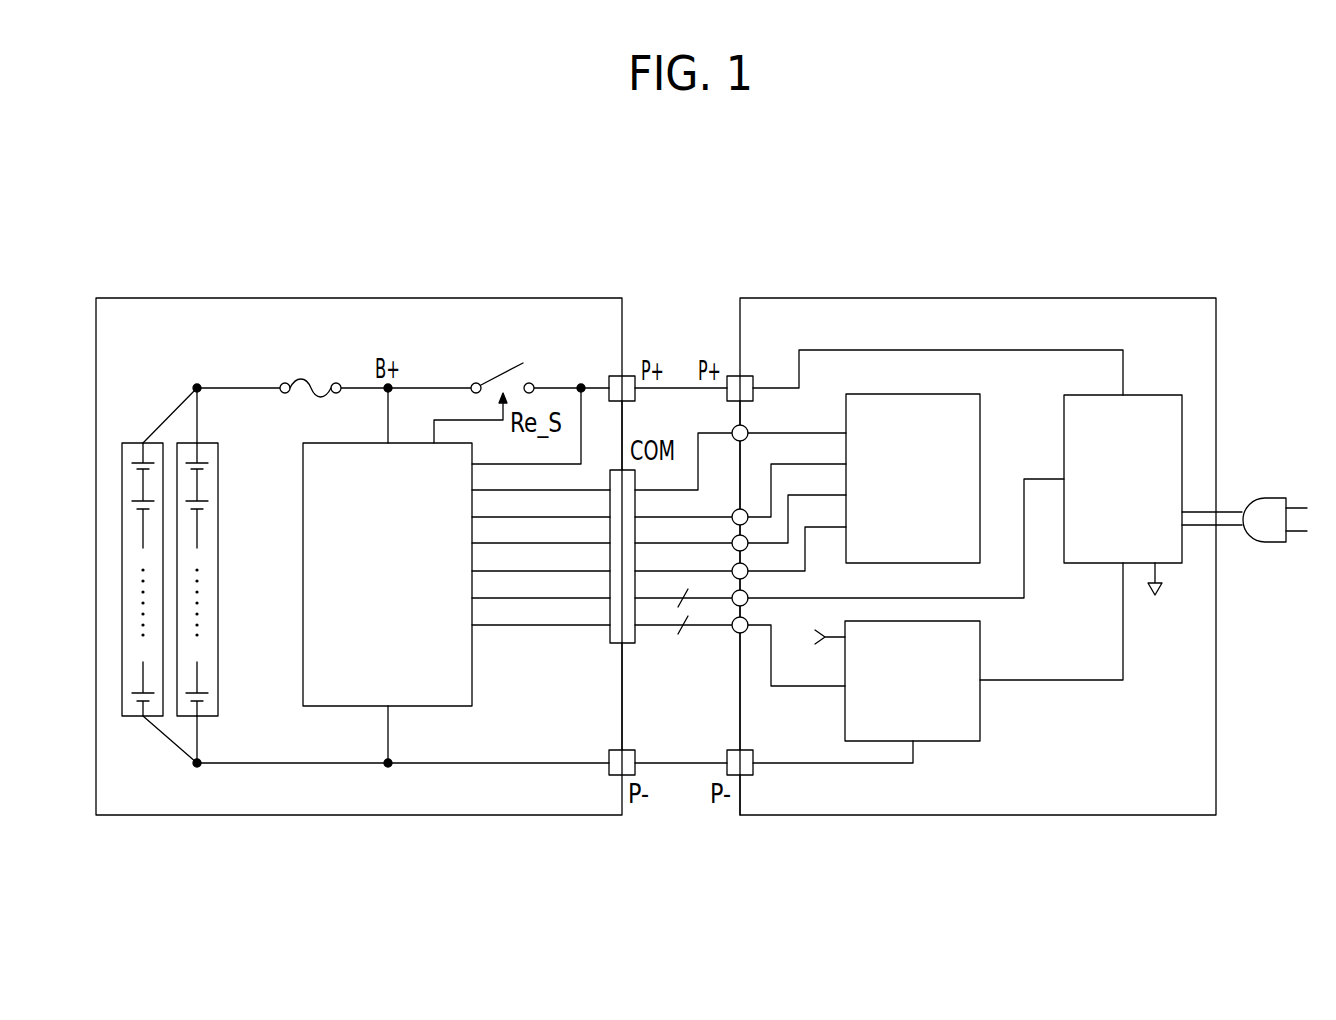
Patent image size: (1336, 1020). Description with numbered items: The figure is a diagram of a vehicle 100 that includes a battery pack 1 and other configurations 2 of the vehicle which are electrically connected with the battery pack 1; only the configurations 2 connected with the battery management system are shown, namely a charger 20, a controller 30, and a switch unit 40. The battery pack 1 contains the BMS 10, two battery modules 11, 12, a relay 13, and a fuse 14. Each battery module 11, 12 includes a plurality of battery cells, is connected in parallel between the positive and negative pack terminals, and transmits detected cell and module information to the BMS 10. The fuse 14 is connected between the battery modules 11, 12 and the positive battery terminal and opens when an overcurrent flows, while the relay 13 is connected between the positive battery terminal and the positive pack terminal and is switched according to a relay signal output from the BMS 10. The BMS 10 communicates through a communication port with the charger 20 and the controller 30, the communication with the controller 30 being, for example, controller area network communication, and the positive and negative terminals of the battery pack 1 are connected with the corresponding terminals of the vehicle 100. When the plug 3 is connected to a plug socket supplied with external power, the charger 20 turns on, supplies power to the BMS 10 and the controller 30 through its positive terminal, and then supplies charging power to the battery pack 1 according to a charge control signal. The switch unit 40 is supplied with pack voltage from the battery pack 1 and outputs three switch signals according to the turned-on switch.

The vehicle 100 is at (771, 243).
The battery pack 1 is at (403, 298).
The configurations of a vehicle 2 is at (933, 298).
The plug 3 is at (1266, 498).
The battery management system (BMS) 10 is at (303, 648).
The battery module 11 is at (132, 443).
The battery module 12 is at (207, 443).
The relay 13 is at (532, 369).
The fuse 14 is at (301, 382).
The charger 20 is at (1155, 395).
The controller 30 is at (980, 650).
The switch unit 40 is at (980, 428).